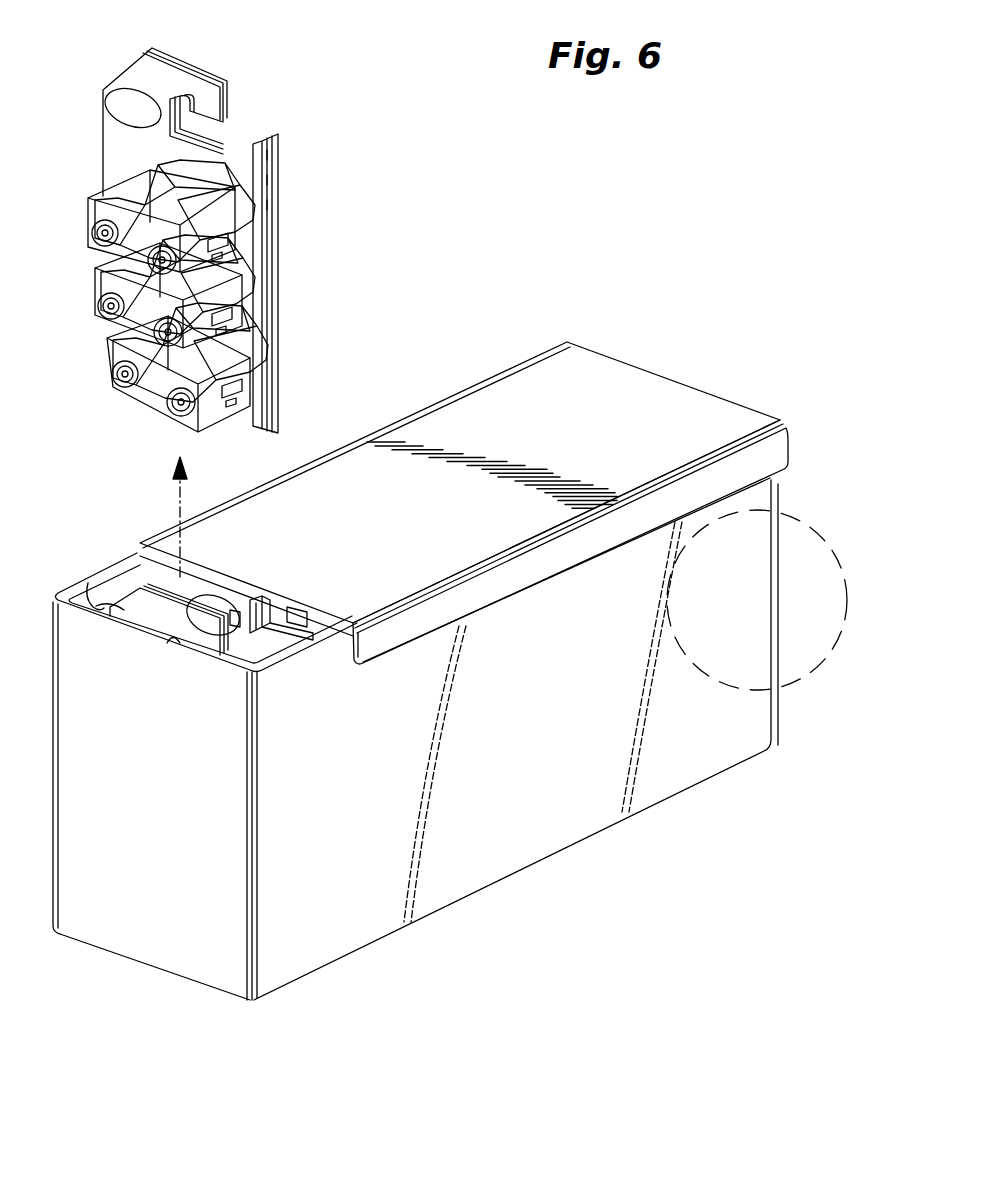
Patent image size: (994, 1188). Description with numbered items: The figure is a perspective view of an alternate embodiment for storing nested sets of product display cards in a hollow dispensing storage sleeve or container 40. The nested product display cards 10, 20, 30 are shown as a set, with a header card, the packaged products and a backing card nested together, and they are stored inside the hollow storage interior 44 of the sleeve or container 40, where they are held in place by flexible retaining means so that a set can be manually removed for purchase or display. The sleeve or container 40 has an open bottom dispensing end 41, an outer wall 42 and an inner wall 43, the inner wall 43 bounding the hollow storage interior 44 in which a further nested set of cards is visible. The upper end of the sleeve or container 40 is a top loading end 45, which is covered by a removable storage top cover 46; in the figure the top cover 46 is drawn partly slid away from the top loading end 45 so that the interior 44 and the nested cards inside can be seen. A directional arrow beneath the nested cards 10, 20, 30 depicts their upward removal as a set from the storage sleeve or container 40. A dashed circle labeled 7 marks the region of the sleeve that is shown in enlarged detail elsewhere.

The detail region shown in FIG. 7 is at (797, 521).
The product display card 10 is at (270, 182).
The product display card 20 is at (274, 266).
The product display card 30 is at (283, 380).
The hollow dispensing storage sleeve or container 40 is at (464, 459).
The open bottom dispensing end 41 is at (398, 734).
The outer wall 42 is at (80, 670).
The inner wall 43 is at (93, 606).
The hollow storage interior 44 is at (127, 588).
The top loading end 45 is at (670, 367).
The removable storage top cover 46 is at (523, 397).